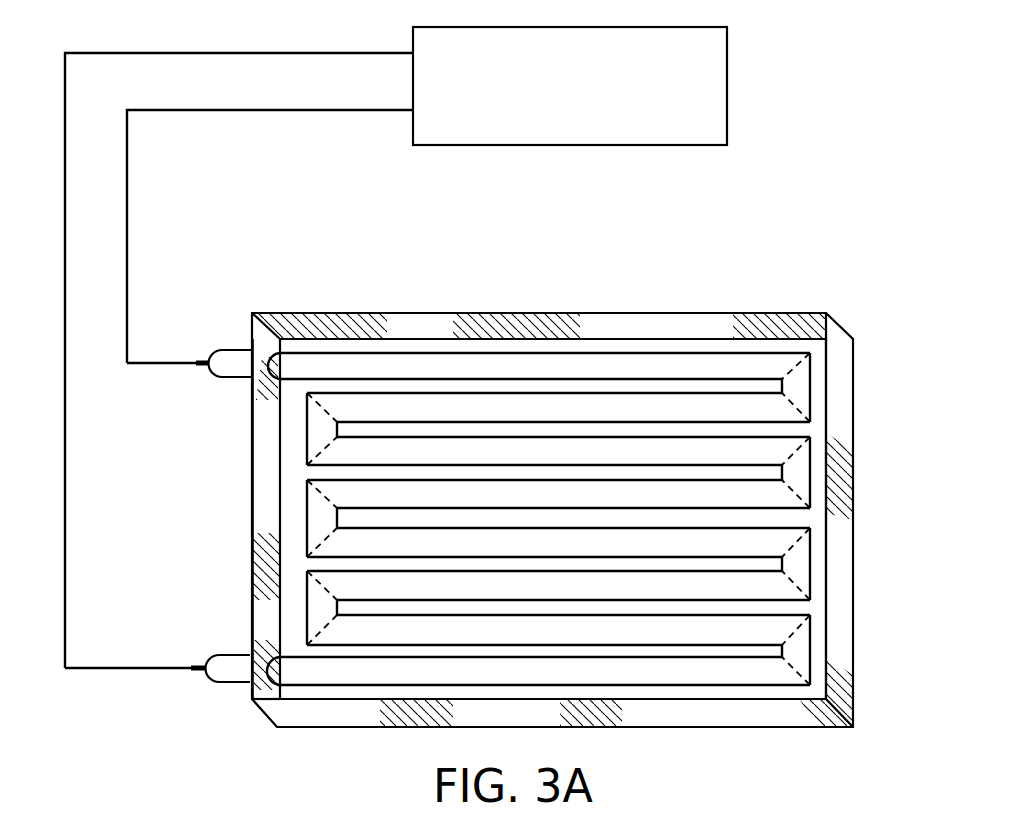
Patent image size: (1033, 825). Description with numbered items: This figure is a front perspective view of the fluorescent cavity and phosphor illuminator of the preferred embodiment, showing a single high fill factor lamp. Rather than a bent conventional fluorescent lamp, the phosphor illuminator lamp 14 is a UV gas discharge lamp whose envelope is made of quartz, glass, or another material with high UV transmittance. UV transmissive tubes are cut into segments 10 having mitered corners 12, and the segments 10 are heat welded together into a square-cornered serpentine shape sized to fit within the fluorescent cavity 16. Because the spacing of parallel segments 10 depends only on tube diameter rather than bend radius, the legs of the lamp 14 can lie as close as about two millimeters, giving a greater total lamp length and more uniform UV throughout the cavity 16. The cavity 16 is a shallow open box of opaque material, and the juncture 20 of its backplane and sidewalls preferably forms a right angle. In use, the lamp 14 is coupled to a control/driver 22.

The segments 10 is at (682, 410).
The mitered corners 12 is at (318, 402).
The phosphor illuminator lamp 14 is at (529, 362).
The fluorescent cavity 16 is at (413, 320).
The juncture 20 is at (267, 525).
The control/driver 22 is at (727, 98).